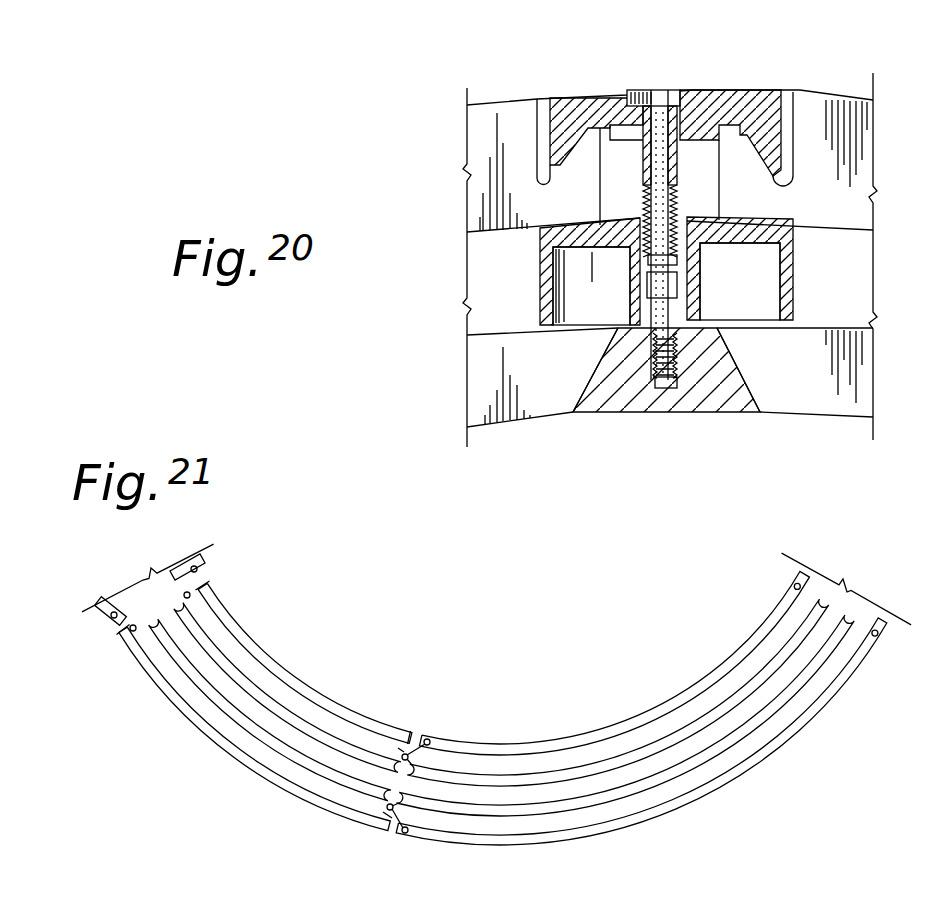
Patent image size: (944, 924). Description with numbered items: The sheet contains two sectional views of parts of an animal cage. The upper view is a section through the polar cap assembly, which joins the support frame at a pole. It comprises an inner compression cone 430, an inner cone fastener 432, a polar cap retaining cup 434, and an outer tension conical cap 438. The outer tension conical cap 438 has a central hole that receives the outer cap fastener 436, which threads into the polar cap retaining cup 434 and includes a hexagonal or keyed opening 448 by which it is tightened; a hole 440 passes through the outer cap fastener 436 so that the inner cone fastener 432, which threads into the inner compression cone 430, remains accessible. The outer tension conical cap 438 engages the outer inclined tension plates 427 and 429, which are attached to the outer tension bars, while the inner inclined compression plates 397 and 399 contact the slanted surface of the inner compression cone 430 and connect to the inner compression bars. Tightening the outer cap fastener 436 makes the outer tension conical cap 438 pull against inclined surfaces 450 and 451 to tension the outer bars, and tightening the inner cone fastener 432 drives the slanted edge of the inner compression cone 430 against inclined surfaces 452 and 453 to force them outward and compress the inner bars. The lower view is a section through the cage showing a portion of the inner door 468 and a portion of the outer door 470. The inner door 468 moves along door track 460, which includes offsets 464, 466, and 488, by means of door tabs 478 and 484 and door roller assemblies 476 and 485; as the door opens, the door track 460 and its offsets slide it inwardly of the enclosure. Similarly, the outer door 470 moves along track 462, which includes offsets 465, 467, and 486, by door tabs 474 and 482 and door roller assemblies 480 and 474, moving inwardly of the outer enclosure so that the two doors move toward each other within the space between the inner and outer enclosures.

In FIG. 20, the inner inclined compression plate 397 is at (820, 400).
In FIG. 20, the inner inclined compression plate 399 is at (477, 388).
In FIG. 20, the outer inclined tension plate 427 is at (815, 90).
In FIG. 20, the outer inclined tension plate 429 is at (496, 100).
In FIG. 20, the inner compression cone 430 is at (656, 413).
In FIG. 20, the inner cone fastener 432 is at (706, 290).
In FIG. 20, the polar cap retaining cup 434 is at (540, 258).
In FIG. 20, the outer cap fastener 436 is at (637, 90).
In FIG. 20, the outer tension conical cap 438 is at (575, 95).
In FIG. 20, the hole 440 is at (668, 168).
In FIG. 20, the hexagonal or keyed opening 448 is at (681, 90).
In FIG. 20, the inclined surface 450 is at (545, 178).
In FIG. 20, the inclined surface 451 is at (782, 182).
In FIG. 20, the inclined surface 452 is at (590, 378).
In FIG. 20, the inclined surface 453 is at (742, 392).
In FIG. 21, the door track 460 is at (603, 758).
In FIG. 21, the track 462 is at (645, 785).
In FIG. 21, the offset 464 is at (440, 746).
In FIG. 21, the offset 465 is at (462, 842).
In FIG. 21, the offset 466 is at (200, 600).
In FIG. 21, the offset 467 is at (148, 660).
In FIG. 21, the inner door 468 is at (265, 628).
In FIG. 21, the outer door 470 is at (218, 762).
In FIG. 21, the door tab 474 is at (387, 815).
In FIG. 21, the door roller assembly 476 is at (403, 754).
In FIG. 21, the door tab 478 is at (417, 745).
In FIG. 21, the door roller assembly 480 is at (138, 590).
In FIG. 21, the door tab 482 is at (128, 635).
In FIG. 21, the door tab 484 is at (182, 556).
In FIG. 21, the door roller assembly 485 is at (172, 578).
In FIG. 21, the offset 486 is at (380, 812).
In FIG. 21, the offset 488 is at (395, 748).